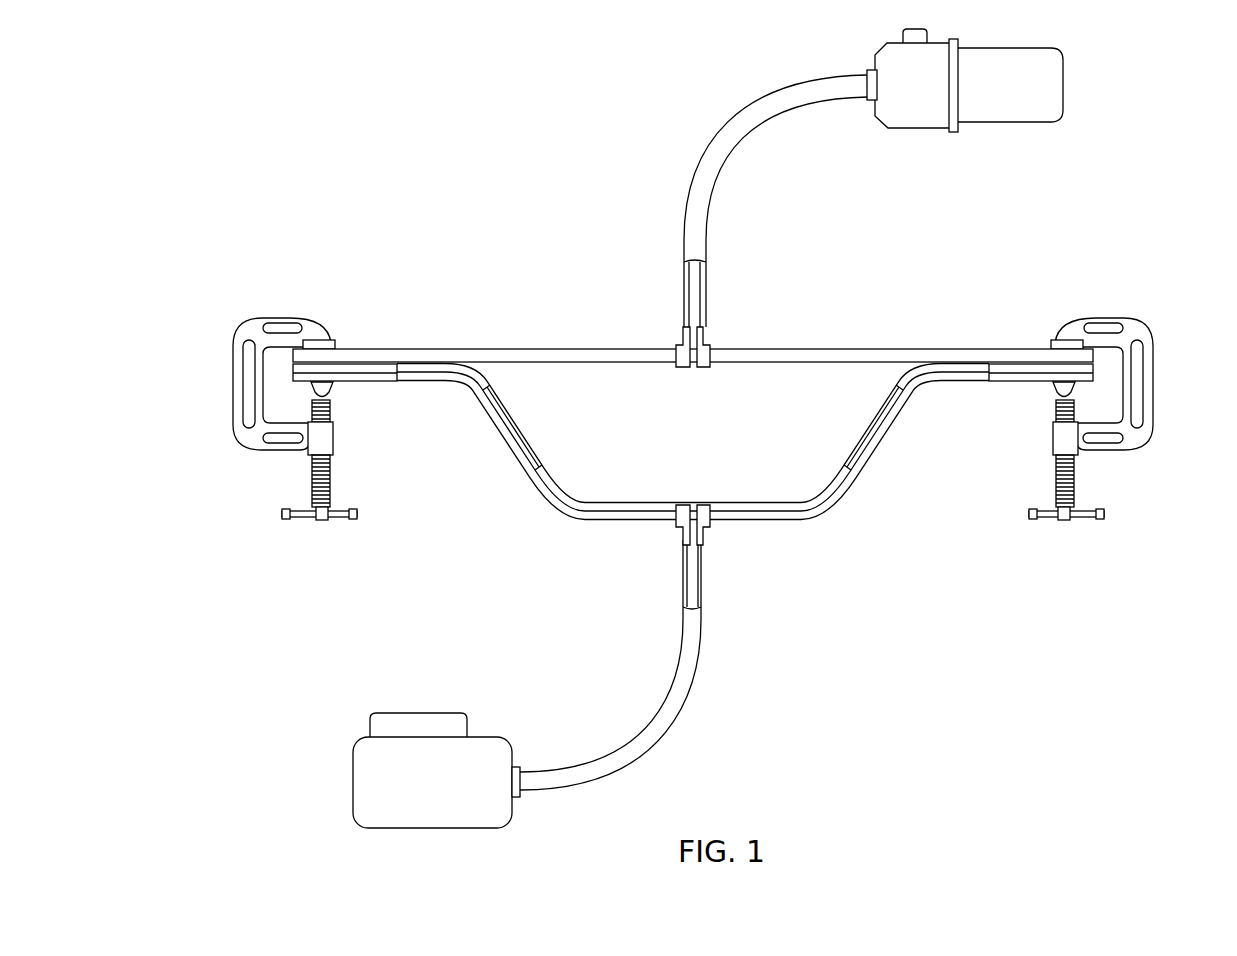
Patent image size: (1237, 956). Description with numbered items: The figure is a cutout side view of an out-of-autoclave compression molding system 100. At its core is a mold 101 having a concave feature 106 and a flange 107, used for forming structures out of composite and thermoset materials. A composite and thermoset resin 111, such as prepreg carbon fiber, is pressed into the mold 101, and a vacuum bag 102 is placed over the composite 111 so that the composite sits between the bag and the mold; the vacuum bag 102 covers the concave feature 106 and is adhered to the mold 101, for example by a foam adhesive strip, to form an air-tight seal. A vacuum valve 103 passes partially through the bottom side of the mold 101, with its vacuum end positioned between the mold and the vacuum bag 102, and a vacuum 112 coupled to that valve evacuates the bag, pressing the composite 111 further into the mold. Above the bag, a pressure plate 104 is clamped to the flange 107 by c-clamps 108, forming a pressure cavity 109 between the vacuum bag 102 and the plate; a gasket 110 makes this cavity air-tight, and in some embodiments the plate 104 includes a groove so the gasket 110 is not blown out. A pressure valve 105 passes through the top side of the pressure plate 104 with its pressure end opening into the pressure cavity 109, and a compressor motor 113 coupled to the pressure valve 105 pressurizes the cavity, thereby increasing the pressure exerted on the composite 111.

The out-of-autoclave compression molding system 100 is at (367, 113).
The mold 101 is at (878, 512).
The vacuum bag 102 is at (627, 500).
The vacuum valve 103 is at (705, 527).
The pressure plate 104 is at (912, 348).
The pressure valve 105 is at (713, 347).
The concave feature 106 is at (845, 510).
The flange 107 is at (990, 383).
The c-clamps 108 is at (234, 380).
The pressure cavity 109 is at (780, 448).
The gasket 110 is at (333, 372).
The composite and thermoset resin 111 is at (526, 478).
The vacuum 112 is at (353, 786).
The compressor motor 113 is at (1063, 80).